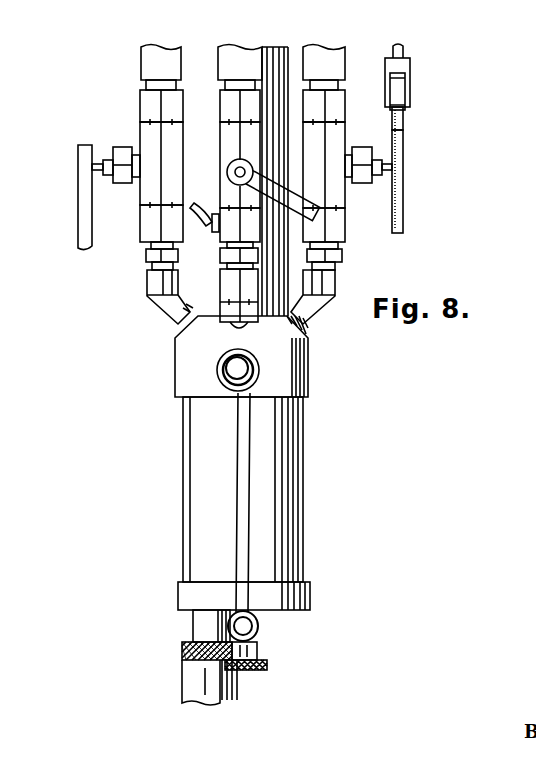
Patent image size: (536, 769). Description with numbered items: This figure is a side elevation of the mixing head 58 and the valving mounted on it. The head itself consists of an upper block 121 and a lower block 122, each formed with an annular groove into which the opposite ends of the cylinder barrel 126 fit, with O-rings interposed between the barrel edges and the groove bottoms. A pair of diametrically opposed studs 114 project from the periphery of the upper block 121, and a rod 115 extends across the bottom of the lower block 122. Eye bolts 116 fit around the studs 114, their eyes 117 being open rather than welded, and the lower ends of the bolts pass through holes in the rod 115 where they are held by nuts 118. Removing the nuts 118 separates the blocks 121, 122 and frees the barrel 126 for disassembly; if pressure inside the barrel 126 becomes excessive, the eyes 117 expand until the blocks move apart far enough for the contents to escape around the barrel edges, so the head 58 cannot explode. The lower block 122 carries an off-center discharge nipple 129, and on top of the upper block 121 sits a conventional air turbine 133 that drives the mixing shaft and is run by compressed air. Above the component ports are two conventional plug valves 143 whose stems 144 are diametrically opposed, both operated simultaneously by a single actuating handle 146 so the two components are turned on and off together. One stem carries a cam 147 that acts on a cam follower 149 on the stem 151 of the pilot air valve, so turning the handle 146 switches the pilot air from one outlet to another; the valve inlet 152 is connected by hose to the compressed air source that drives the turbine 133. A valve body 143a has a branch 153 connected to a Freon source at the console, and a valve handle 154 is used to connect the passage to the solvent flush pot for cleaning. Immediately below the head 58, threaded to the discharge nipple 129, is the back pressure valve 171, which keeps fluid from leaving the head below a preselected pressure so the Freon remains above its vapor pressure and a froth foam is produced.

The mixing head 58 is at (315, 463).
The stud 114 is at (246, 366).
The rod 115 is at (259, 627).
The eye bolt 116 is at (247, 458).
The eye 117 is at (220, 372).
The nut 118 is at (269, 665).
The upper block 121 is at (301, 376).
The lower block 122 is at (312, 593).
The cylinder barrel 126 is at (294, 513).
The discharge nipple 129 is at (193, 623).
The air turbine 133 is at (283, 100).
The plug valve 143 is at (156, 186).
The valve body 143a is at (252, 153).
The valve stem 144 is at (104, 152).
The actuating handle 146 is at (81, 213).
The cam 147 is at (403, 130).
The cam follower 149 is at (400, 95).
The stem 151 is at (404, 48).
The valve inlet 152 is at (241, 268).
The branch 153 is at (198, 219).
The valve handle 154 is at (286, 178).
The back pressure valve 171 is at (178, 680).